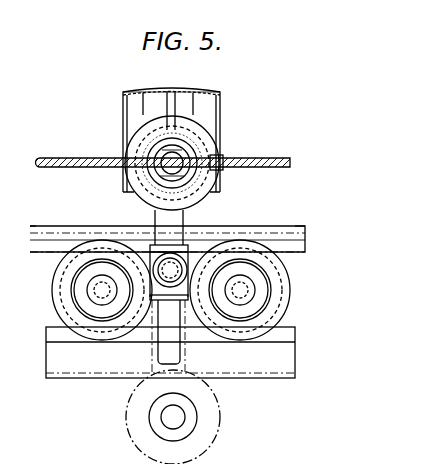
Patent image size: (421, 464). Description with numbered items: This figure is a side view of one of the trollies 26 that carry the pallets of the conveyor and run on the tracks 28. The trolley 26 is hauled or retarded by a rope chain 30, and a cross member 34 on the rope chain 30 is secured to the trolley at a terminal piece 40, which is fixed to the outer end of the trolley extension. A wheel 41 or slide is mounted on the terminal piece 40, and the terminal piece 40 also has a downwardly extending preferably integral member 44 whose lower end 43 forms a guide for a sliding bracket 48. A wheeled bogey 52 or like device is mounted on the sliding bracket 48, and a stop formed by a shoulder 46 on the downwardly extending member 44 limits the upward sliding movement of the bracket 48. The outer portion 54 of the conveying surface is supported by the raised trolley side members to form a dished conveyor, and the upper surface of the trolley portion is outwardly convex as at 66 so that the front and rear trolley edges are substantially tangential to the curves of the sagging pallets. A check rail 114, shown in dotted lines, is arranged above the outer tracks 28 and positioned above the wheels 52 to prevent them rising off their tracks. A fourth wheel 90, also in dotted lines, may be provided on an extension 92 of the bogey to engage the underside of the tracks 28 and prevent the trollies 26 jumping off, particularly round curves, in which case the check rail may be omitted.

The trolley 26 is at (327, 252).
The track 28 is at (285, 358).
The rope chain 30 is at (258, 156).
The cross member 34 is at (165, 166).
The terminal piece 40 is at (200, 112).
The wheel 41 is at (211, 143).
The lower end 43 is at (171, 355).
The downwardly extending member 44 is at (178, 219).
The shoulder 46 is at (153, 248).
The sliding bracket 48 is at (159, 298).
The wheeled bogey 52 is at (280, 300).
The outer portion of the conveying surface 54 is at (190, 255).
The outwardly convex upper surface 66 is at (137, 76).
The fourth wheel 90 is at (208, 409).
The extension 92 is at (187, 425).
The check rail 114 is at (284, 227).